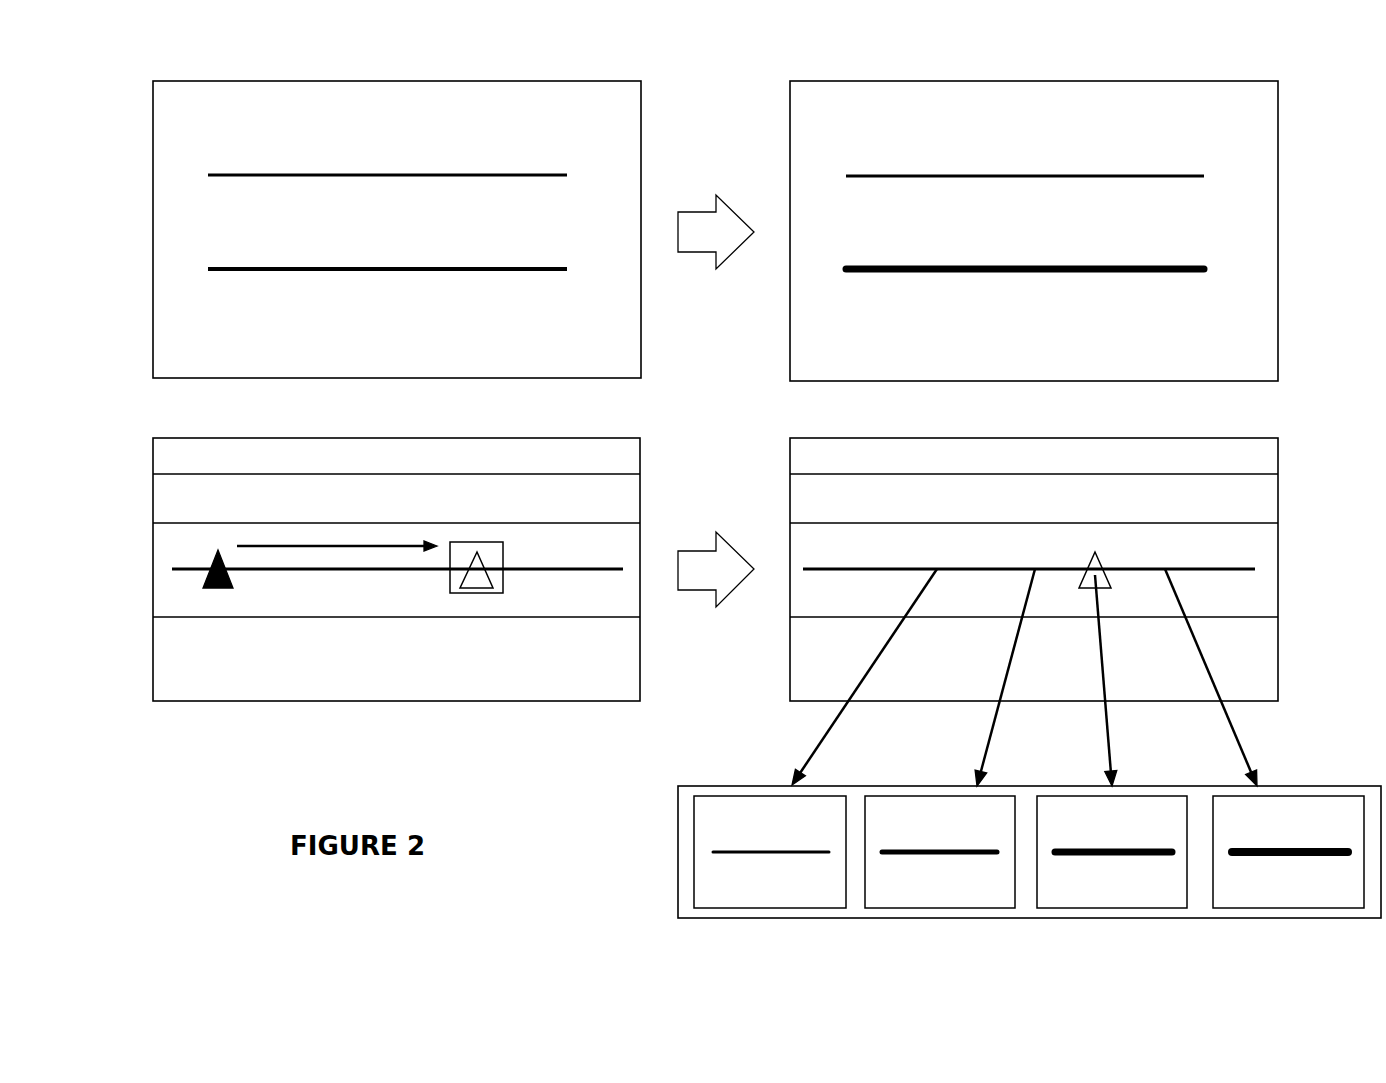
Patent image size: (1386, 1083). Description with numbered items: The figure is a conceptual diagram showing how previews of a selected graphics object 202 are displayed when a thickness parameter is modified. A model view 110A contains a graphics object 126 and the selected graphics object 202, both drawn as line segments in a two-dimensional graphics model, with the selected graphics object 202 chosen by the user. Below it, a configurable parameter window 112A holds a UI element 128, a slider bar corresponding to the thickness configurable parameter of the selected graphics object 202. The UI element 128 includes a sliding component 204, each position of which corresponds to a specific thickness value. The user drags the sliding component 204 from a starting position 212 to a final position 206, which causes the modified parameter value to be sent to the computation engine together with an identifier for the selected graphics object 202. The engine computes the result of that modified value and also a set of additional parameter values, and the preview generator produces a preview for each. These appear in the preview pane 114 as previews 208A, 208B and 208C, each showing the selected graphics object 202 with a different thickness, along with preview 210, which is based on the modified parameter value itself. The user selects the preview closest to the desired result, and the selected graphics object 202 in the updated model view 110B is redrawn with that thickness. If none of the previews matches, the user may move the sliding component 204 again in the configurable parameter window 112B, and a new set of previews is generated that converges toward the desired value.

The model view 110A is at (154, 109).
The model view 110B is at (790, 134).
The graphics object 126 is at (437, 175).
The selected graphics object 202 is at (437, 269).
The configurable parameter window 112A is at (395, 438).
The configurable parameter window 112B is at (1033, 438).
The UI element 128 is at (153, 569).
The starting position 212 is at (218, 550).
The sliding component 204 is at (477, 552).
The final position 206 is at (493, 542).
The preview pane 114 is at (1003, 786).
The preview 208A is at (702, 796).
The preview 208B is at (870, 796).
The preview 210 is at (1142, 796).
The preview 208C is at (1282, 796).